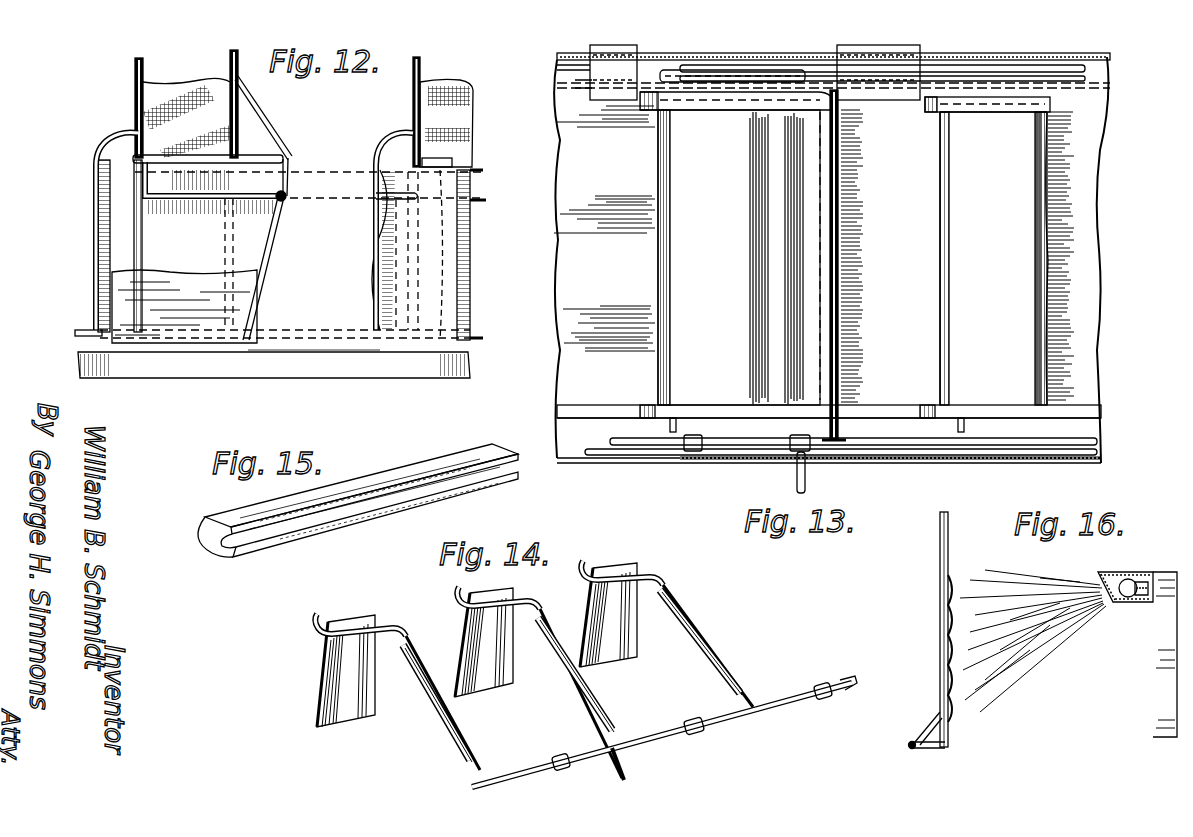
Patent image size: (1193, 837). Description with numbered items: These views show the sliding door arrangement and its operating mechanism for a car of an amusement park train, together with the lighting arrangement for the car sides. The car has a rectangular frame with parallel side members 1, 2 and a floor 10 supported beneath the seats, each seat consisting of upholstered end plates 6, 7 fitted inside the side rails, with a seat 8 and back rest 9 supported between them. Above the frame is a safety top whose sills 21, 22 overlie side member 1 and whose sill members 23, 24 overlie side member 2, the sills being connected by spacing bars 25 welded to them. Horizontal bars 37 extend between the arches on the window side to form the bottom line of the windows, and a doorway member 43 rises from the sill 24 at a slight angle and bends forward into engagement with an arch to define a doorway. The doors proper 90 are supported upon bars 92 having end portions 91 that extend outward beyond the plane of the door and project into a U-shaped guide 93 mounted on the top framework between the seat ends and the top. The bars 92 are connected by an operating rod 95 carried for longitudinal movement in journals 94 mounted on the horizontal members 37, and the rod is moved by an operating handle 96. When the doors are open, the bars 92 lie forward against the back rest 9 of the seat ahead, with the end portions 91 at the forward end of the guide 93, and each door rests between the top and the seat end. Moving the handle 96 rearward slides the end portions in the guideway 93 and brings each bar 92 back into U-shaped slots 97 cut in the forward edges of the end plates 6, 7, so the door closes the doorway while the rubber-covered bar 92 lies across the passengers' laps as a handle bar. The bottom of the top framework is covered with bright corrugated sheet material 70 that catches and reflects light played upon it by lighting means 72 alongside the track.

In FIG. 12, the side member 1 is at (215, 365).
In FIG. 13, the side member 1 is at (557, 70).
In FIG. 13, the side member 2 is at (557, 432).
In FIG. 13, the end plate 6 is at (720, 103).
In FIG. 12, the end plate 7 is at (120, 305).
In FIG. 13, the end plate 7 is at (645, 408).
In FIG. 13, the seat 8 is at (713, 213).
In FIG. 13, the back rest 9 is at (840, 215).
In FIG. 13, the floor 10 is at (601, 276).
In FIG. 13, the sill 21 is at (600, 455).
In FIG. 13, the sill 22 is at (628, 448).
In FIG. 13, the sill member 23 is at (580, 85).
In FIG. 12, the sill member 24 is at (85, 337).
In FIG. 13, the sill member 24 is at (590, 58).
In FIG. 13, the spacing bar 25 is at (673, 418).
In FIG. 13, the horizontal bar 37 is at (735, 462).
In FIG. 12, the doorway member 43 is at (268, 235).
In FIG. 16, the solid sheet material 70 is at (952, 712).
In FIG. 16, the lighting means 72 is at (1128, 602).
In FIG. 13, the door 90 is at (1085, 75).
In FIG. 14, the door 90 is at (335, 688).
In FIG. 14, the end portion 91 is at (318, 628).
In FIG. 13, the bar 92 is at (840, 275).
In FIG. 14, the bar 92 is at (437, 718).
In FIG. 12, the U-shaped guide 93 is at (255, 158).
In FIG. 13, the U-shaped guide 93 is at (740, 68).
In FIG. 15, the U-shaped guide 93 is at (235, 512).
In FIG. 13, the journal 94 is at (690, 452).
In FIG. 14, the journal 94 is at (700, 735).
In FIG. 14, the operating rod 95 is at (528, 770).
In FIG. 13, the operating handle 96 is at (806, 478).
In FIG. 14, the operating handle 96 is at (628, 772).
In FIG. 12, the U-shaped slot 97 is at (396, 206).